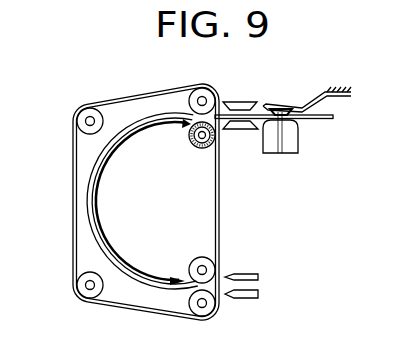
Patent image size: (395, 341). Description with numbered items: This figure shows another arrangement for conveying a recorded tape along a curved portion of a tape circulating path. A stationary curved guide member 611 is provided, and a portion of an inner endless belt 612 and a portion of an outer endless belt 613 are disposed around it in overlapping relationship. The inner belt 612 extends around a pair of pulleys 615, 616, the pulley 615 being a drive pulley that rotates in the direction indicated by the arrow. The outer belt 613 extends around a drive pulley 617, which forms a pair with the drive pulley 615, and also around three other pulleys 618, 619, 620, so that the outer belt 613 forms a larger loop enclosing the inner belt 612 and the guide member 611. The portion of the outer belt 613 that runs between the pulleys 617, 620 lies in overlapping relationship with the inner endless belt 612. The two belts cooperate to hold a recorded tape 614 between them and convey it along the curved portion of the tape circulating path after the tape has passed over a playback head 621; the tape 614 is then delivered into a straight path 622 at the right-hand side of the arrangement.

The stationary curved guide member 611 is at (104, 166).
The inner endless belt 612 is at (221, 168).
The outer endless belt 613 is at (137, 95).
The recorded tape 614 is at (318, 119).
The drive pulley 615 is at (189, 134).
The pulley 616 is at (195, 261).
The drive pulley 617 is at (211, 92).
The pulley 618 is at (76, 110).
The pulley 619 is at (77, 278).
The pulley 620 is at (211, 307).
The playback head 621 is at (273, 151).
The straight path 622 is at (246, 287).